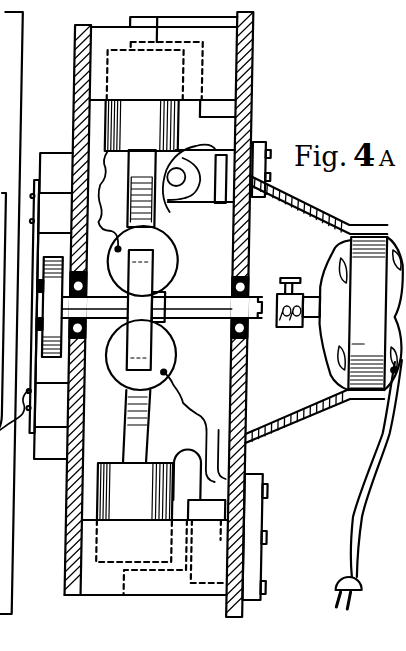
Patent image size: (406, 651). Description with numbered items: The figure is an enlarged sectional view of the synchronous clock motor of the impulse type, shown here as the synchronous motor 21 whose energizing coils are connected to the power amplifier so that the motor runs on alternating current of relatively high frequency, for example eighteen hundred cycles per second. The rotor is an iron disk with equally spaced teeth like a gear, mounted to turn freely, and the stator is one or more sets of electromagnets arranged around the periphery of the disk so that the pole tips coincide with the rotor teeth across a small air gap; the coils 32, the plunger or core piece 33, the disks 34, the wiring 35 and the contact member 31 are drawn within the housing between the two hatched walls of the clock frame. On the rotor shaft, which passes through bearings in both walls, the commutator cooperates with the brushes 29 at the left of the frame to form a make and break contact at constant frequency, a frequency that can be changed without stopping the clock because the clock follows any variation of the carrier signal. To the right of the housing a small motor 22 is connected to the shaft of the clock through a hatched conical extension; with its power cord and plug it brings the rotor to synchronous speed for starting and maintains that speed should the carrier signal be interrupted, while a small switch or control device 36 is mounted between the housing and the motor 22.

The synchronous motor 21 is at (126, 207).
The small motor 22 is at (388, 237).
The brushes 29 is at (63, 360).
The contact member 31 is at (168, 197).
The solenoid coil 32 is at (178, 123).
The armature plunger 33 is at (133, 165).
The disc 34 is at (140, 412).
The connecting wire 35 is at (182, 423).
The thermostat switch 36 is at (290, 278).